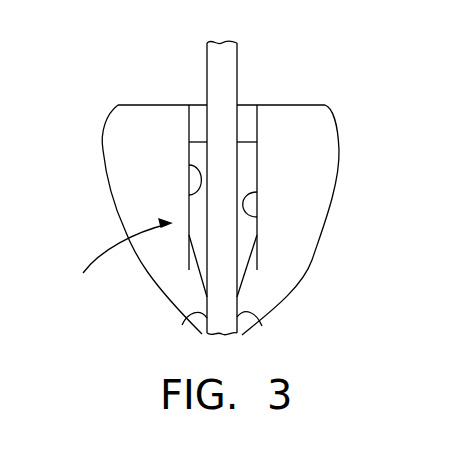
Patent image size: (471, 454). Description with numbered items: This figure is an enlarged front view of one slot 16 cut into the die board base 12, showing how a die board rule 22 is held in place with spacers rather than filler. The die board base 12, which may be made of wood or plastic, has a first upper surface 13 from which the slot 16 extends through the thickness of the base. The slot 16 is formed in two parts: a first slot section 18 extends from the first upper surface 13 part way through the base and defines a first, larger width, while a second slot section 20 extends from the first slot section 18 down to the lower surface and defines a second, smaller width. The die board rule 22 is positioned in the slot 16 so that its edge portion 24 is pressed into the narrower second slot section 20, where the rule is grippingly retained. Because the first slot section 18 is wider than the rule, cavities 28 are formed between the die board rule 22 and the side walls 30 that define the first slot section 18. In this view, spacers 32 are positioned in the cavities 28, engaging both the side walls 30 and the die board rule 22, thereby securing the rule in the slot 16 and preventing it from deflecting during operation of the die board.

The die board base 12 is at (133, 172).
The first upper surface 13 is at (162, 105).
The slot 16 is at (122, 263).
The first slot section 18 is at (258, 178).
The second slot section 20 is at (243, 318).
The die board rule 22 is at (238, 80).
The edge portion 24 is at (200, 313).
The cavities 28 is at (197, 266).
The side walls 30 is at (197, 195).
The spacers 32 is at (197, 158).